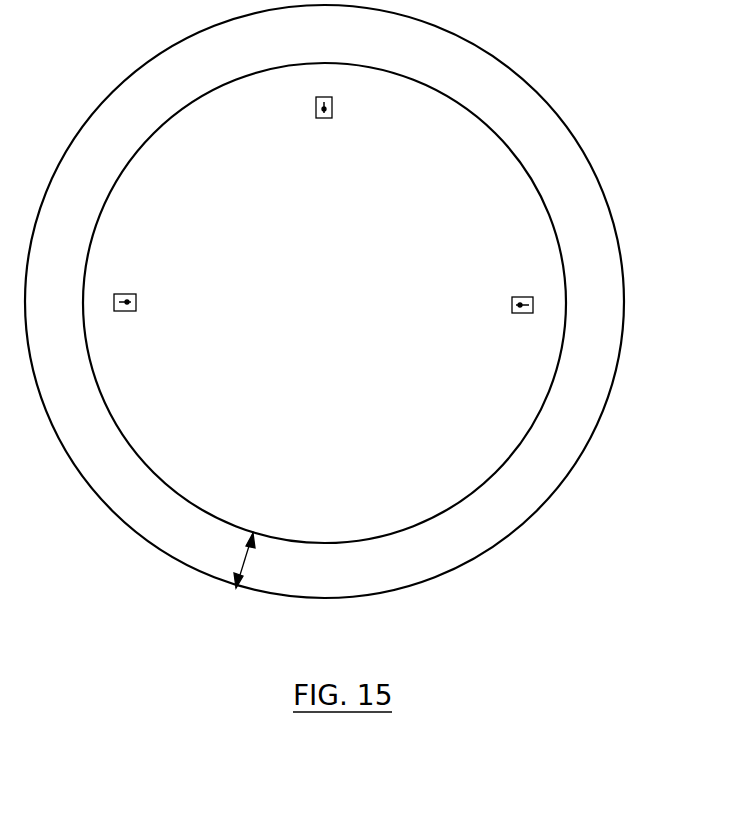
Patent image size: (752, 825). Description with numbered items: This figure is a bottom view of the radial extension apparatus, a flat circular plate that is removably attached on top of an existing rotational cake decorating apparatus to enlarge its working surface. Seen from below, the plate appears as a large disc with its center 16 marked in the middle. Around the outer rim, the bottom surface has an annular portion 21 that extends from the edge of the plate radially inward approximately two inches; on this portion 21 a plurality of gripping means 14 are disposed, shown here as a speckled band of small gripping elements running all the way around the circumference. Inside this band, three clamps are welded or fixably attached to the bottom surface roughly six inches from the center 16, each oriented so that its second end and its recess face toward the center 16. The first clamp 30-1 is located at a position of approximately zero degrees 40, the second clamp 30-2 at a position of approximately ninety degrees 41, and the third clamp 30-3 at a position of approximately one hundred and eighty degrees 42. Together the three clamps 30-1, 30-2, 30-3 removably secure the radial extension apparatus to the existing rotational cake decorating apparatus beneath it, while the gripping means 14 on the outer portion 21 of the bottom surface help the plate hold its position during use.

The gripping means 14 is at (337, 301).
The center 16 is at (345, 271).
The portion of the bottom surface 21 is at (247, 560).
The first clamp 30-1 is at (476, 277).
The second clamp 30-2 is at (265, 133).
The third clamp 30-3 is at (169, 268).
The zero degree position 40 is at (487, 340).
The ninety degree position 41 is at (382, 119).
The one hundred eighty degree position 42 is at (176, 333).